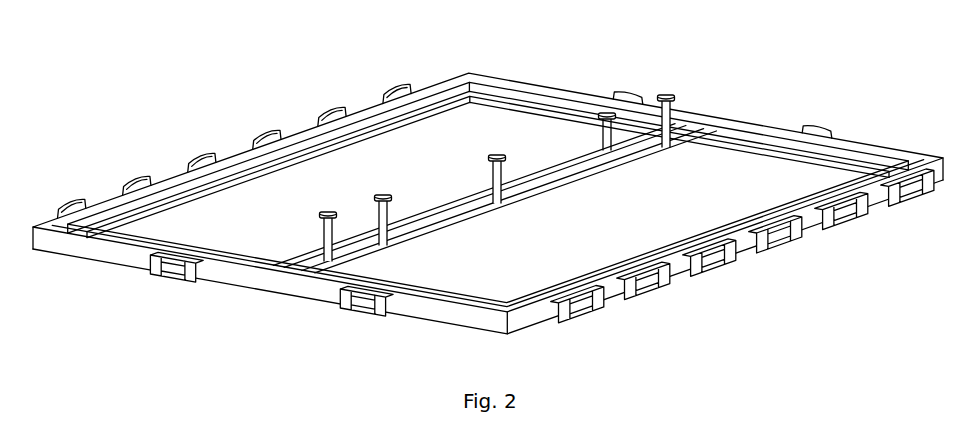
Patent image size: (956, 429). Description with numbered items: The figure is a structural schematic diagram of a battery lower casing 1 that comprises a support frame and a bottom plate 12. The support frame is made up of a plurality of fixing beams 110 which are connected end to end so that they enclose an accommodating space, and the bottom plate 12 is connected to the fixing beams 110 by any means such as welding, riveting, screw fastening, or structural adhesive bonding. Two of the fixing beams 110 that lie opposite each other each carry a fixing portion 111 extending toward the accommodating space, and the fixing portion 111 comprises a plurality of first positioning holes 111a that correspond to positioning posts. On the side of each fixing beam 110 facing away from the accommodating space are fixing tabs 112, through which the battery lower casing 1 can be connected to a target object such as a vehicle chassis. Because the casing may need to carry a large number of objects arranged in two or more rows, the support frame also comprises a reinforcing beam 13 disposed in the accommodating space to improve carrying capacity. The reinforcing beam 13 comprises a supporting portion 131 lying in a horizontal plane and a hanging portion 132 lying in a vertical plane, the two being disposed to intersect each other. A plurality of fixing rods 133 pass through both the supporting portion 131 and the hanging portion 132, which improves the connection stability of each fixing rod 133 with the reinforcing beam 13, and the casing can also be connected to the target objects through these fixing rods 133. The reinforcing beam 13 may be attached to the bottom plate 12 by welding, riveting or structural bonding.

The battery lower casing 1 is at (488, 178).
The fixing beams 110 is at (322, 124).
The fixing portion 111 is at (233, 191).
The first positioning holes 111a is at (294, 167).
The fixing tabs 112 is at (195, 157).
The bottom plate 12 is at (512, 115).
The reinforcing beam 13 is at (494, 187).
The supporting portion 131 is at (403, 249).
The hanging portion 132 is at (443, 218).
The fixing rods 133 is at (505, 160).